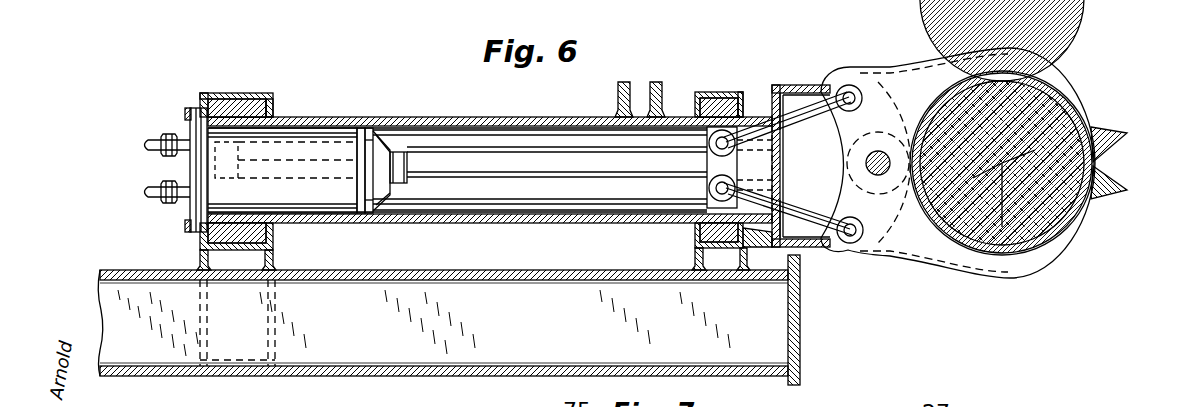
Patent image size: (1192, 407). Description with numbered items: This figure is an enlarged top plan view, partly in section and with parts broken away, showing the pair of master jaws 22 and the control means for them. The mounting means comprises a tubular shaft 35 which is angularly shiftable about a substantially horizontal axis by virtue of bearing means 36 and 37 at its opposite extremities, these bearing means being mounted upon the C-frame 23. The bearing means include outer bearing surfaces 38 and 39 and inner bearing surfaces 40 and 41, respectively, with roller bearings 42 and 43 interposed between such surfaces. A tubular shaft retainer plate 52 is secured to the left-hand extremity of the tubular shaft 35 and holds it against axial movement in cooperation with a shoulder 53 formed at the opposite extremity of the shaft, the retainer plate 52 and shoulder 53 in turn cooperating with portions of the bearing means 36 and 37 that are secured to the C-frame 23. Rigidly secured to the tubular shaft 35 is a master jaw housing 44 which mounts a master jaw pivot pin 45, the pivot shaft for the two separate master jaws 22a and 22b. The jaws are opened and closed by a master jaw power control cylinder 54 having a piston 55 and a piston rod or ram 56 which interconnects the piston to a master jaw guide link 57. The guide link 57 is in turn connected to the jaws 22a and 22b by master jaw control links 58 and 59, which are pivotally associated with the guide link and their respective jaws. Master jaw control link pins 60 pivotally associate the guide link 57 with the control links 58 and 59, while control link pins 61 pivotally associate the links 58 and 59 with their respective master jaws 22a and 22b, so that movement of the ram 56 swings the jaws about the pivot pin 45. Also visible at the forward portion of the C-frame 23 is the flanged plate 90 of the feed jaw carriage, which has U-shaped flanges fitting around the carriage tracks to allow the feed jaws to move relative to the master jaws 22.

The master jaws 22 is at (1098, 163).
The master jaw 22a is at (1093, 108).
The master jaw 22b is at (1098, 198).
The C-frame 23 is at (489, 258).
The tubular shaft 35 is at (421, 126).
The bearing means 36 is at (233, 90).
The bearing means 37 is at (707, 90).
The outer bearing surface 38 is at (205, 92).
The outer bearing surface 39 is at (739, 92).
The inner bearing surface 40 is at (275, 112).
The inner bearing surface 41 is at (688, 116).
The roller bearings 42 is at (200, 238).
The roller bearings 43 is at (695, 232).
The master jaw housing 44 is at (883, 92).
The master jaw pivot pin 45 is at (878, 151).
The tubular shaft retainer plate 52 is at (190, 126).
The shoulder 53 is at (757, 92).
The master jaw power control cylinder 54 is at (336, 127).
The piston 55 is at (223, 167).
The piston rod or ram 56 is at (468, 170).
The master jaw guide link 57 is at (707, 143).
The master jaw control link 58 is at (797, 122).
The master jaw control link 59 is at (799, 206).
The master jaw control link pins 60 is at (721, 147).
The control link pins 61 is at (849, 85).
The flanged plate 90 is at (800, 325).